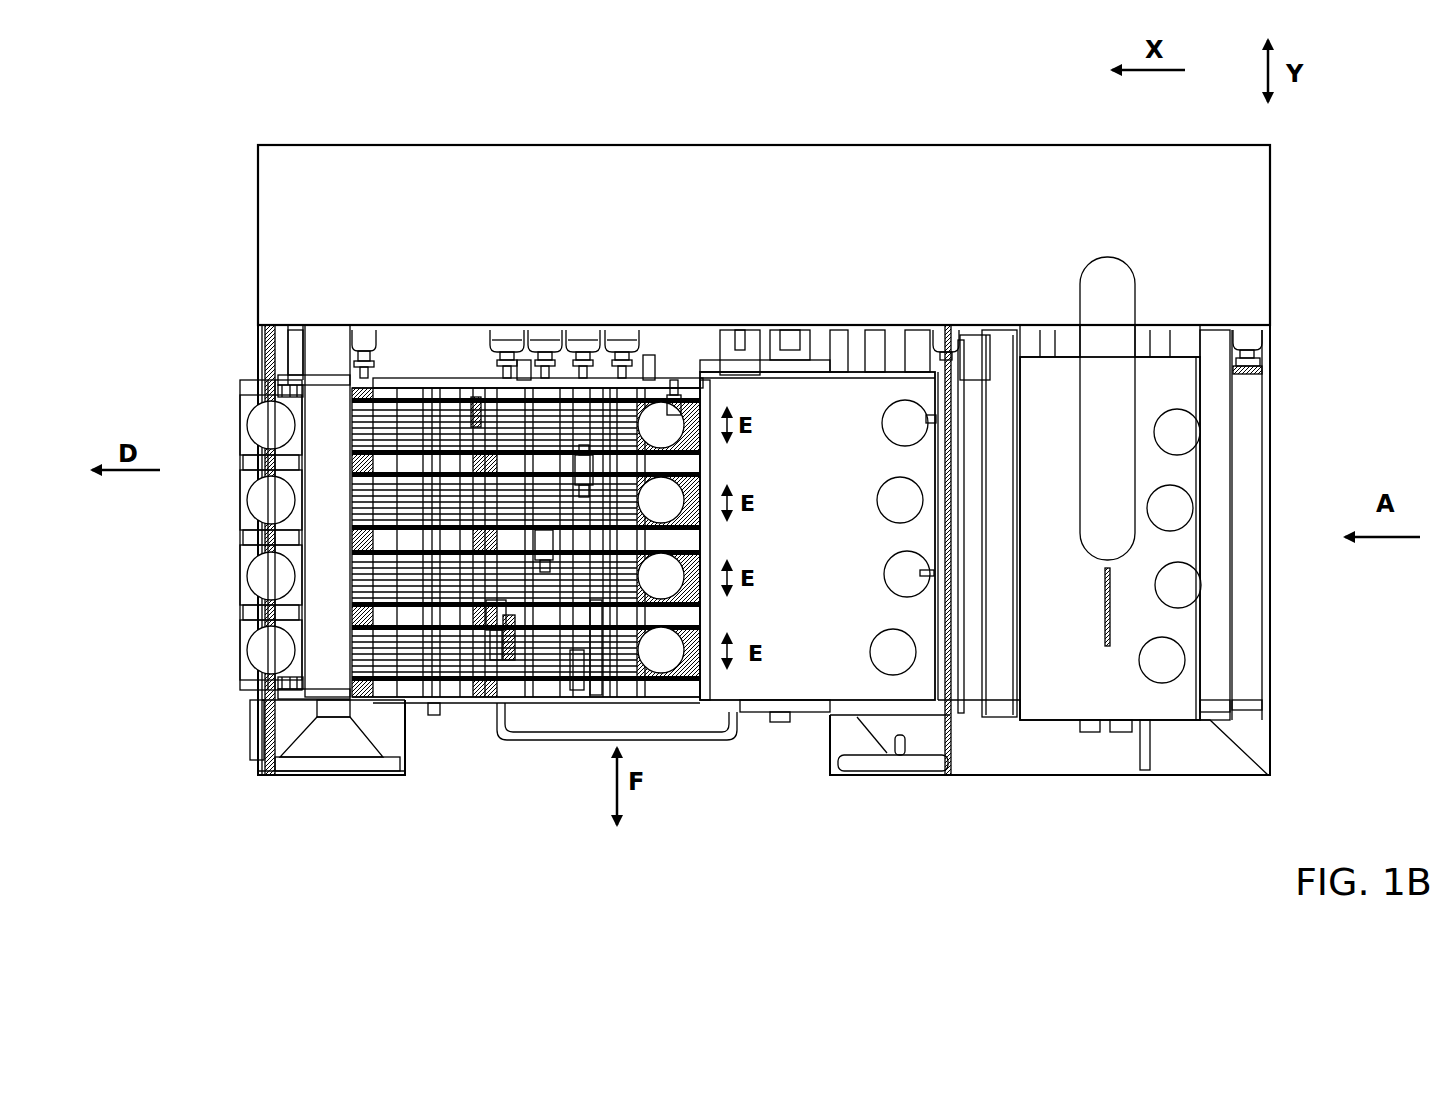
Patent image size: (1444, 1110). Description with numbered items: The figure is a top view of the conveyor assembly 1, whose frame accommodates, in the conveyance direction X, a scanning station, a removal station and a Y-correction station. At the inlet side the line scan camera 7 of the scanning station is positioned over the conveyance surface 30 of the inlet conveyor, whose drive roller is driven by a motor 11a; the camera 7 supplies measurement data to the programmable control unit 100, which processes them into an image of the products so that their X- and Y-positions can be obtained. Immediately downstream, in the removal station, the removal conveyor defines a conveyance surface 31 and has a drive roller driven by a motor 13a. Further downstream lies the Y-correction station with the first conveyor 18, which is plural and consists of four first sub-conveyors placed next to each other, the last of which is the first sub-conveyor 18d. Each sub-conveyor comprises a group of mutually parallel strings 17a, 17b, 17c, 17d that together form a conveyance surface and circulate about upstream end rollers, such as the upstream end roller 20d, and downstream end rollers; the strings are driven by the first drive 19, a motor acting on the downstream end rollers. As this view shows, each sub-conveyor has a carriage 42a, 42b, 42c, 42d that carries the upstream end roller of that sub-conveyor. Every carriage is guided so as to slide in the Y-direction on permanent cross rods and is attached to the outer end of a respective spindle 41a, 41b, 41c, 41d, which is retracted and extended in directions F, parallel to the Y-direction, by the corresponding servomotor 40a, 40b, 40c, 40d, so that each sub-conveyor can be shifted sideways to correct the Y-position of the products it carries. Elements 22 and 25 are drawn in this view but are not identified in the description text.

The conveyor assembly 1 is at (1312, 214).
The programmable control unit 100 is at (764, 235).
The line scan camera 7 is at (1120, 419).
The motor 11a is at (1264, 341).
The motor 13a is at (948, 328).
The strings 17a is at (702, 436).
The strings 17b is at (702, 476).
The strings 17c is at (702, 600).
The strings 17d is at (702, 682).
The first conveyor 18 is at (585, 462).
The first sub-conveyor 18d is at (550, 690).
The first drive 19 is at (360, 330).
The upstream end roller 20d is at (702, 410).
The frame 22 is at (327, 511).
The roller unit 25 is at (237, 496).
The conveyance surface 30 is at (1088, 651).
The conveyance surface 31 is at (828, 566).
The servomotor 40a is at (622, 336).
The servomotor 40b is at (586, 330).
The servomotor 40c is at (547, 334).
The servomotor 40d is at (506, 332).
The spindle 41a is at (648, 342).
The spindle 41b is at (520, 330).
The spindle 41c is at (486, 690).
The spindle 41d is at (578, 690).
The carriage 42a is at (688, 386).
The carriage 42b is at (480, 425).
The carriage 42c is at (512, 700).
The carriage 42d is at (597, 707).